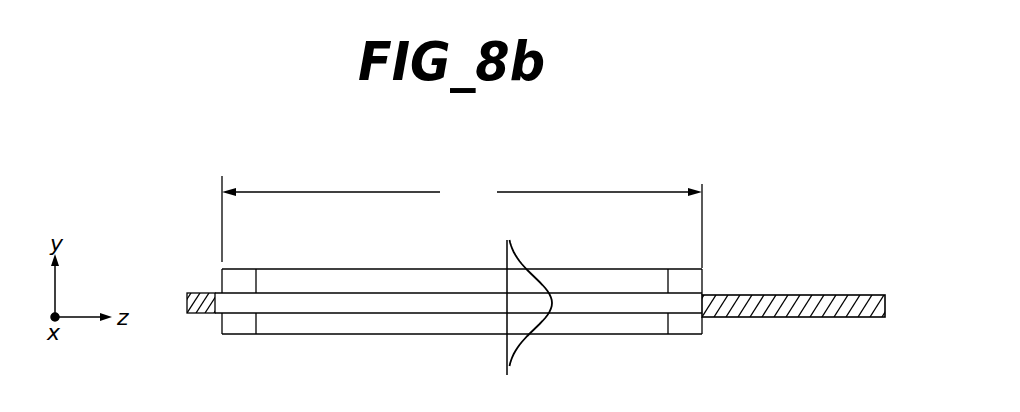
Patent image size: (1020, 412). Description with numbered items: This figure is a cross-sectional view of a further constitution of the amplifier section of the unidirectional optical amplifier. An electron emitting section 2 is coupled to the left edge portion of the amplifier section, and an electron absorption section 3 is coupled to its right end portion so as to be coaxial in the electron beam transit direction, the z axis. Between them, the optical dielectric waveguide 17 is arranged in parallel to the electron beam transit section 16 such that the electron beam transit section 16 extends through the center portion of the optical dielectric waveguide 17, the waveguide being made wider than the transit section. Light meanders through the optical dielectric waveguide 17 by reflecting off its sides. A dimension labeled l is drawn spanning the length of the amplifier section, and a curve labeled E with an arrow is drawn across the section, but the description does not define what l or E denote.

The length of electrode section l is at (462, 202).
The electron emitting section 2 is at (198, 293).
The electron absorption section 3 is at (787, 295).
The electron beam transit section 16 is at (407, 302).
The optical dielectric waveguide 17 is at (462, 327).
The electric field distribution E is at (507, 240).